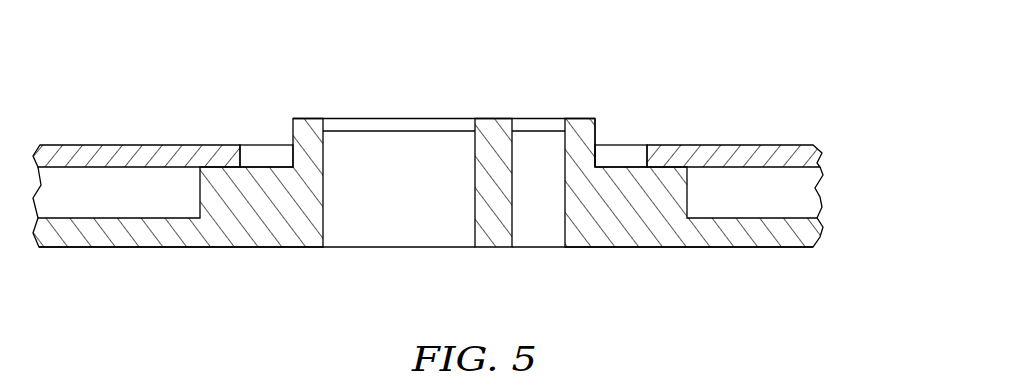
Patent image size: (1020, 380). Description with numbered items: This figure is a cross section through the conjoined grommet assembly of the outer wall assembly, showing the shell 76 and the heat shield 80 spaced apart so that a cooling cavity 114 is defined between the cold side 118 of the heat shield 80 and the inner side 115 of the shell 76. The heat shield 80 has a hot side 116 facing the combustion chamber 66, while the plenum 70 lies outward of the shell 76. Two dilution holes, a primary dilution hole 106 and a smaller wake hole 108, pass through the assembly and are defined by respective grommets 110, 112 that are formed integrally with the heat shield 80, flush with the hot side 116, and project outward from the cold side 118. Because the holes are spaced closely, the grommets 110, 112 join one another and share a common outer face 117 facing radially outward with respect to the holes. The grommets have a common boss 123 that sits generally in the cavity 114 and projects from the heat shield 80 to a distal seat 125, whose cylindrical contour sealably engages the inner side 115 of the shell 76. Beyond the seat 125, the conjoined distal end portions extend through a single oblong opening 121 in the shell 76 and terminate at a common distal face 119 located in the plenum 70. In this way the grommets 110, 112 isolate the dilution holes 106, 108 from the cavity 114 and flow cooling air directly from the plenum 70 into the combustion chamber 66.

The combustion chamber 66 is at (430, 303).
The plenum 70 is at (460, 41).
The shell 76 is at (200, 145).
The heat shield 80 is at (123, 248).
The primary dilution hole 106 is at (413, 200).
The wake hole 108 is at (558, 208).
The grommet 110 is at (313, 148).
The grommet 112 is at (592, 118).
The cooling cavity 114 is at (134, 205).
The inner side 115 is at (783, 170).
The hot side 116 is at (775, 247).
The common outer face 117 is at (597, 132).
The cold side 118 is at (173, 217).
The common distal face 119 is at (493, 118).
The oblong opening 121 is at (282, 153).
The common boss 123 is at (256, 168).
The seat 125 is at (627, 147).